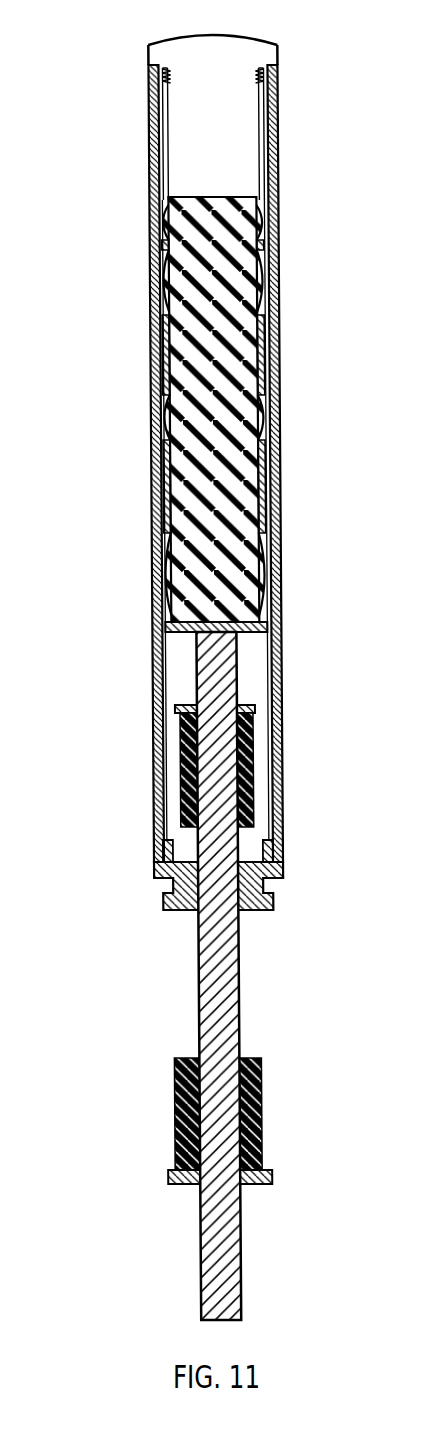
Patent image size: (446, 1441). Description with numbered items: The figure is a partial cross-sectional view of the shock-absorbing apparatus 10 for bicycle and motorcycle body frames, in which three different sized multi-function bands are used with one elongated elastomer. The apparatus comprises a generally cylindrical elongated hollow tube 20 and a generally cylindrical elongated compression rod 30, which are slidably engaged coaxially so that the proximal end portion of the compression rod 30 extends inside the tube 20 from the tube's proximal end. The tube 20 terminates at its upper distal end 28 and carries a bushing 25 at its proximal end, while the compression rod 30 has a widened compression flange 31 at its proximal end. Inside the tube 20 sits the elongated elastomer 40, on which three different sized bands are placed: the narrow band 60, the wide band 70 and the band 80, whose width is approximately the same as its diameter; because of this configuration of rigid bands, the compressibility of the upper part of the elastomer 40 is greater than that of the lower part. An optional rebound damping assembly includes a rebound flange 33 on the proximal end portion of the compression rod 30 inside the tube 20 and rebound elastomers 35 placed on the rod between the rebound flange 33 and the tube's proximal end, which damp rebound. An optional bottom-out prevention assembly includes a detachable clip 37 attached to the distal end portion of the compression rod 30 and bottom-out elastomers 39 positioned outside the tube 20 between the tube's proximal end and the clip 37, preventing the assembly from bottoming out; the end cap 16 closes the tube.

The shock-absorbing apparatus 10 is at (90, 119).
The end cap 16 is at (262, 42).
The hollow tube 20 is at (147, 281).
The bushing 25 is at (175, 896).
The distal end 28 is at (276, 77).
The compression rod 30 is at (223, 1249).
The compression flange 31 is at (181, 631).
The rebound flange 33 is at (170, 706).
The rebound elastomers 35 is at (252, 788).
The detachable clip 37 is at (160, 1171).
The bottom-out elastomers 39 is at (255, 1100).
The elongated elastomer 40 is at (268, 276).
The narrow band 60 is at (268, 245).
The wide band 70 is at (267, 348).
The band 80 is at (267, 441).